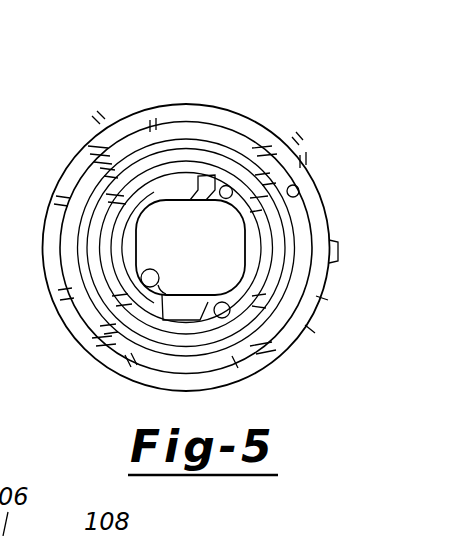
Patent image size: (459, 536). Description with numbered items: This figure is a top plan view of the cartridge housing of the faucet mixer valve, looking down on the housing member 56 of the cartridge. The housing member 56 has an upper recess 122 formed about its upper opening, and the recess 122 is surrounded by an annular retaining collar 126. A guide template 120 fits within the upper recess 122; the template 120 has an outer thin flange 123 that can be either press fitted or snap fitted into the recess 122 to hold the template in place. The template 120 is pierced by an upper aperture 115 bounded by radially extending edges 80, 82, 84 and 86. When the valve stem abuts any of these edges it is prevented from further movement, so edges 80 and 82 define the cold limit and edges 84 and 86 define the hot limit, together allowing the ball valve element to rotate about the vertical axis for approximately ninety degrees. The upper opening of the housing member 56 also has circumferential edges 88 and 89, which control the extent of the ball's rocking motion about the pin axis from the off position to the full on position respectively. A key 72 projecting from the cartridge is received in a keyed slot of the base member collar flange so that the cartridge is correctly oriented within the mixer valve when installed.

The housing member 56 is at (190, 98).
The outer thin flange 123 is at (116, 150).
The annular retaining collar 126 is at (147, 120).
The guide template 120 is at (282, 144).
The upper recess 122 is at (299, 188).
The circumferential edge 88 is at (252, 252).
The upper aperture 115 is at (208, 263).
The radially extending edge 82 is at (193, 194).
The radially extending edge 84 is at (236, 192).
The key 72 is at (338, 250).
The radially extending edge 86 is at (216, 304).
The radially extending edge 80 is at (157, 285).
The circumferential edge 89 is at (167, 290).